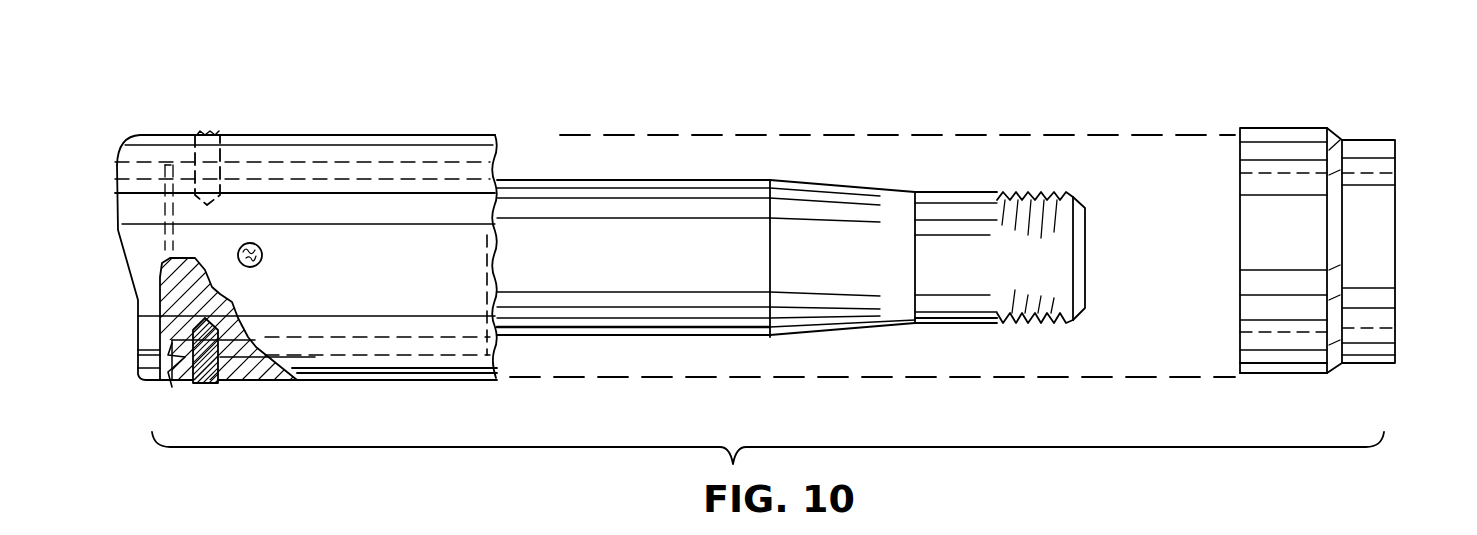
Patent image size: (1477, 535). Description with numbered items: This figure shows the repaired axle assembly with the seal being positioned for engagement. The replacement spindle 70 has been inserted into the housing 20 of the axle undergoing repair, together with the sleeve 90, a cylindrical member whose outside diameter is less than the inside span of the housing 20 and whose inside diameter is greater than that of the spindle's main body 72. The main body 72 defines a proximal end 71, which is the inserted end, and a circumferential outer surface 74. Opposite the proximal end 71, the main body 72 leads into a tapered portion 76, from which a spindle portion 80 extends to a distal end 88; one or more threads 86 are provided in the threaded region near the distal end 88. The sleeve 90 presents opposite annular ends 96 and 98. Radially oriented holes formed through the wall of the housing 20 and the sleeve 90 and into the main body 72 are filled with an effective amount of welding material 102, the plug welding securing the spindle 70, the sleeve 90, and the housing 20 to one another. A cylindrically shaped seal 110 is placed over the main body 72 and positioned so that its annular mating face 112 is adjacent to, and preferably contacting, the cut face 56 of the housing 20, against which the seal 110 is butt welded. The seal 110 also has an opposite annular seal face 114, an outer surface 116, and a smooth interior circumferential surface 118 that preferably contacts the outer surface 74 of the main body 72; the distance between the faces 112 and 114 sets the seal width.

The housing 20 is at (375, 128).
The cut face 56 is at (495, 148).
The replacement spindle 70 is at (798, 251).
The proximal end 71 is at (158, 298).
The main body 72 is at (235, 320).
The circumferential outer surface 74 is at (700, 330).
The tapered portion 76 is at (840, 195).
The spindle portion 80 is at (967, 322).
The threads 86 is at (1018, 195).
The distal end 88 is at (1088, 195).
The sleeve 90 is at (265, 357).
The annular end 96 is at (174, 380).
The annular end 98 is at (502, 170).
The welding material 102 is at (218, 150).
The seal 110 is at (1319, 234).
The annular mating face 112 is at (1250, 207).
The annular seal face 114 is at (1395, 250).
The outer surface 116 is at (1290, 375).
The interior circumferential surface 118 is at (1355, 330).